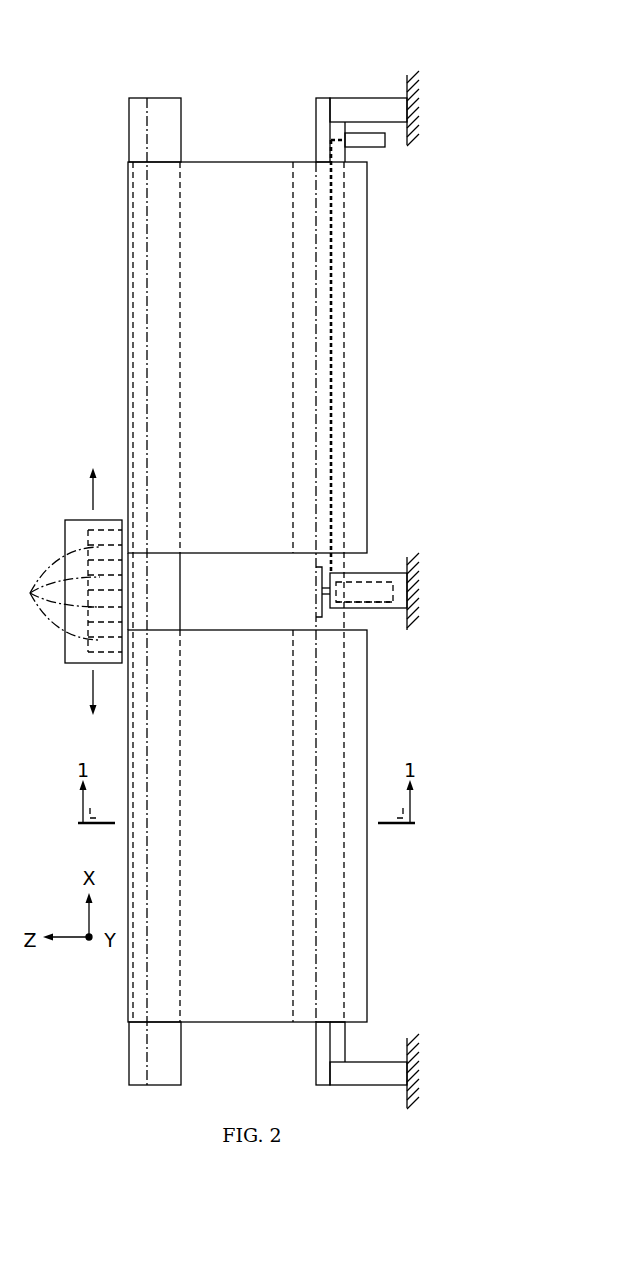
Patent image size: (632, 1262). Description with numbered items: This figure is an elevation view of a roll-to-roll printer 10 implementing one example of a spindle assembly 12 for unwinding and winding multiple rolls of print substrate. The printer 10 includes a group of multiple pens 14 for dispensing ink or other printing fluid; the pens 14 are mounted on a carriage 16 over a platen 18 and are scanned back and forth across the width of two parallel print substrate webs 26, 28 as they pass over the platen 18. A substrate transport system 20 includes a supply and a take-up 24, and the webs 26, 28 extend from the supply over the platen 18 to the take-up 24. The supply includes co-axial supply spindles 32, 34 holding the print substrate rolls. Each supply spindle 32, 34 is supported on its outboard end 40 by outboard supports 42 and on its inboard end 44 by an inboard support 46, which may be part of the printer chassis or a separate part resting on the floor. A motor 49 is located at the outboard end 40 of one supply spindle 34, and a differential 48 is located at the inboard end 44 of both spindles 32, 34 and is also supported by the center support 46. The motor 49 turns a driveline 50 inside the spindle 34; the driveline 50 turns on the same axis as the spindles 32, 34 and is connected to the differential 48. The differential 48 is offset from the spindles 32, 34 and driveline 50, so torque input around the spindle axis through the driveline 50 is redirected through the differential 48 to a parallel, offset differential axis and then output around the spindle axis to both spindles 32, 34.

The roll-to-roll printer 10 is at (90, 1005).
The spindle assembly 12 is at (380, 462).
The pens 14 is at (50, 593).
The carriage 16 is at (65, 537).
The platen 18 is at (140, 342).
The substrate transport system 20 is at (223, 78).
The take-up 24 is at (298, 143).
The print substrate web 26 is at (236, 1012).
The print substrate web 28 is at (235, 170).
The supply spindle 32 is at (347, 1043).
The supply spindle 34 is at (347, 163).
The outboard end 40 is at (316, 115).
The outboard supports 42 is at (367, 97).
The inboard end 44 is at (322, 567).
The inboard support 46 is at (380, 573).
The differential 48 is at (380, 607).
The motor 49 is at (370, 150).
The driveline 50 is at (330, 340).